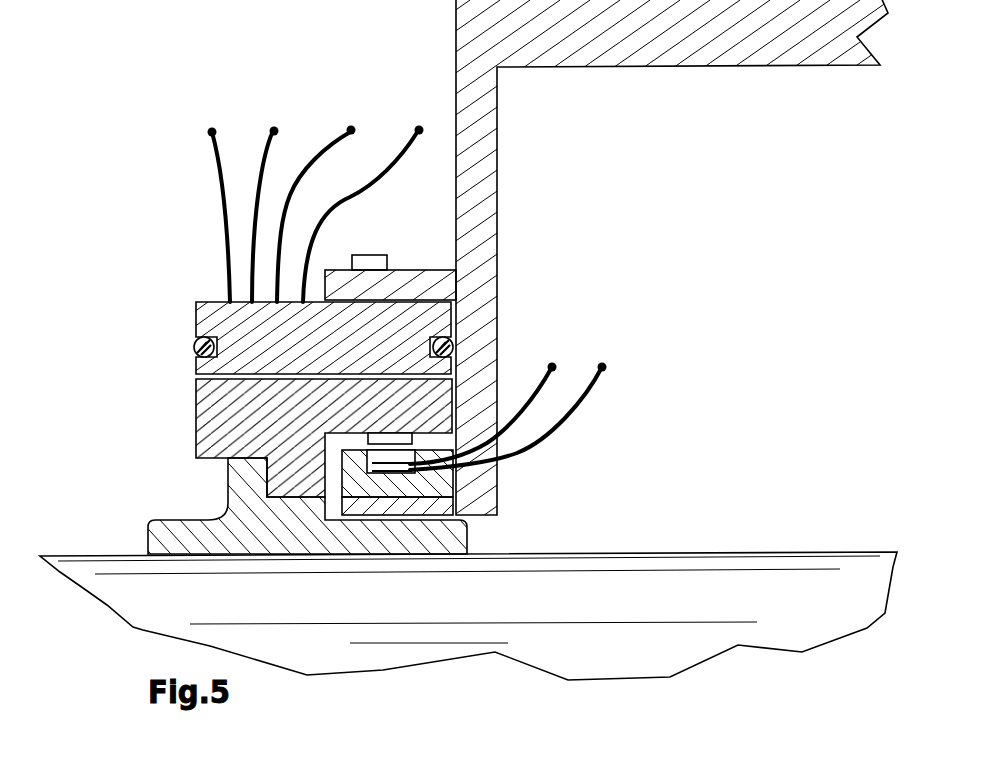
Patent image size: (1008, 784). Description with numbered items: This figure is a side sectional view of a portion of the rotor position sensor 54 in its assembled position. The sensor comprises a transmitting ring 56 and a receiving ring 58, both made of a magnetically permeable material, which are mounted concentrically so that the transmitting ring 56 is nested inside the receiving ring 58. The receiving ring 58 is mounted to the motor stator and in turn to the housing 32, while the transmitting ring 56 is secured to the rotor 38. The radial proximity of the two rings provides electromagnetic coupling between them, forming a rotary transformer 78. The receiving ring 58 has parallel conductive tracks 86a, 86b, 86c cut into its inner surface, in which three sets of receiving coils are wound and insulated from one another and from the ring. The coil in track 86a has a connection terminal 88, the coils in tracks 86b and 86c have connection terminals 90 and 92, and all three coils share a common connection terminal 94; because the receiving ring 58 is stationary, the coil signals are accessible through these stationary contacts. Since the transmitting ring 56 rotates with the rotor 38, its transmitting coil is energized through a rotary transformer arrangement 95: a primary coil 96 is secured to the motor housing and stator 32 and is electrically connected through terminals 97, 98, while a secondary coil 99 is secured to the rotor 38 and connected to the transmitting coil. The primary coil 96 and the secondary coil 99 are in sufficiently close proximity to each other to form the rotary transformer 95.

The housing 32 is at (580, 52).
The rotor 38 is at (670, 590).
The rotor position sensor 54 is at (145, 300).
The transmitting ring 56 is at (202, 403).
The receiving ring 58 is at (215, 302).
The rotary transformer 78 is at (177, 374).
The track 86a is at (260, 180).
The track 86b is at (323, 181).
The track 86c is at (370, 187).
The connection terminal 88 is at (275, 131).
The connection terminal 90 is at (350, 130).
The connection terminal 92 is at (419, 128).
The common connection terminal 94 is at (212, 132).
The rotary transformer arrangement 95 is at (356, 464).
The primary coil 96 is at (417, 529).
The terminal 97 is at (552, 367).
The terminal 98 is at (602, 367).
The secondary coil 99 is at (400, 438).